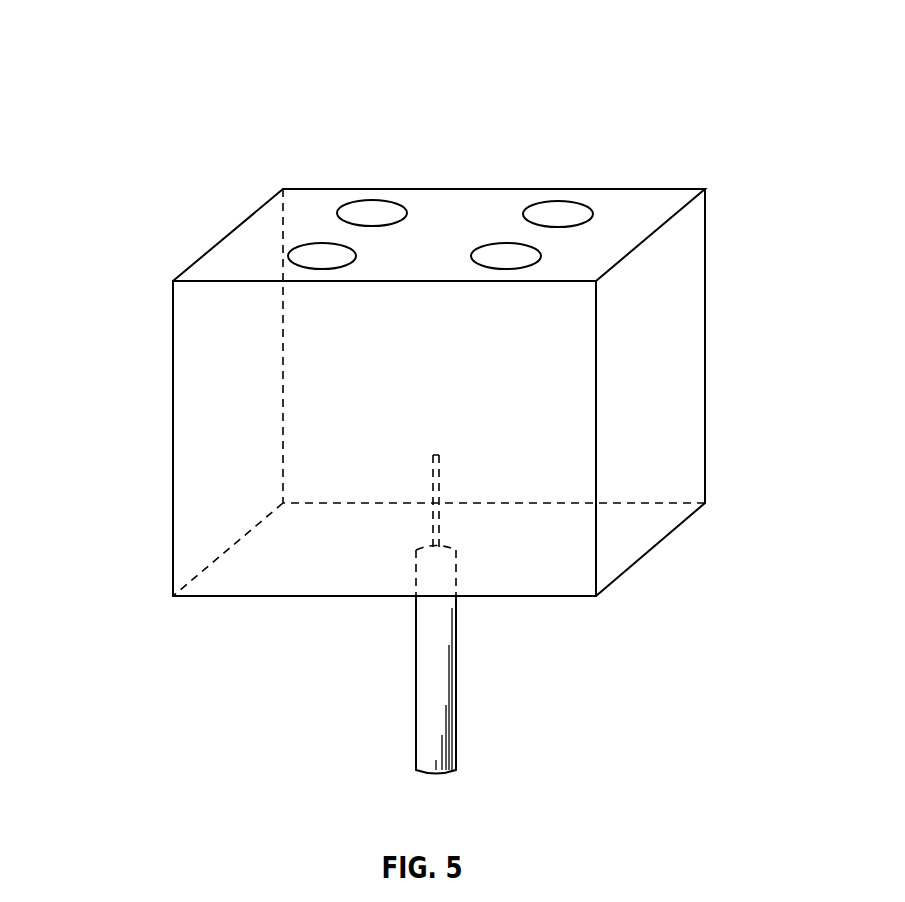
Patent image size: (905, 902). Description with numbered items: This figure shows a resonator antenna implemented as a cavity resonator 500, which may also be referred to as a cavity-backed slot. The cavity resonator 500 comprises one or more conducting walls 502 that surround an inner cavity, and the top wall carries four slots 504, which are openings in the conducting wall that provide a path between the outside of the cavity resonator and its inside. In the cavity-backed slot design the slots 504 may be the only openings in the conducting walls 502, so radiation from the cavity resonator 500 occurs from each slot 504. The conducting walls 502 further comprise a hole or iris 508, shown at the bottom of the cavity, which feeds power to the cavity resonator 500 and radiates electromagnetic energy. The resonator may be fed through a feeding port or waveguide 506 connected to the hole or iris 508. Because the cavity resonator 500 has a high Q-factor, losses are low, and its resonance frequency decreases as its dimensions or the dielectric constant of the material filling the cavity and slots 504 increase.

The cavity resonator 500 is at (229, 139).
The conducting walls 502 is at (689, 388).
The slots 504 is at (322, 243).
The waveguide 506 is at (423, 512).
The hole or iris 508 is at (461, 602).